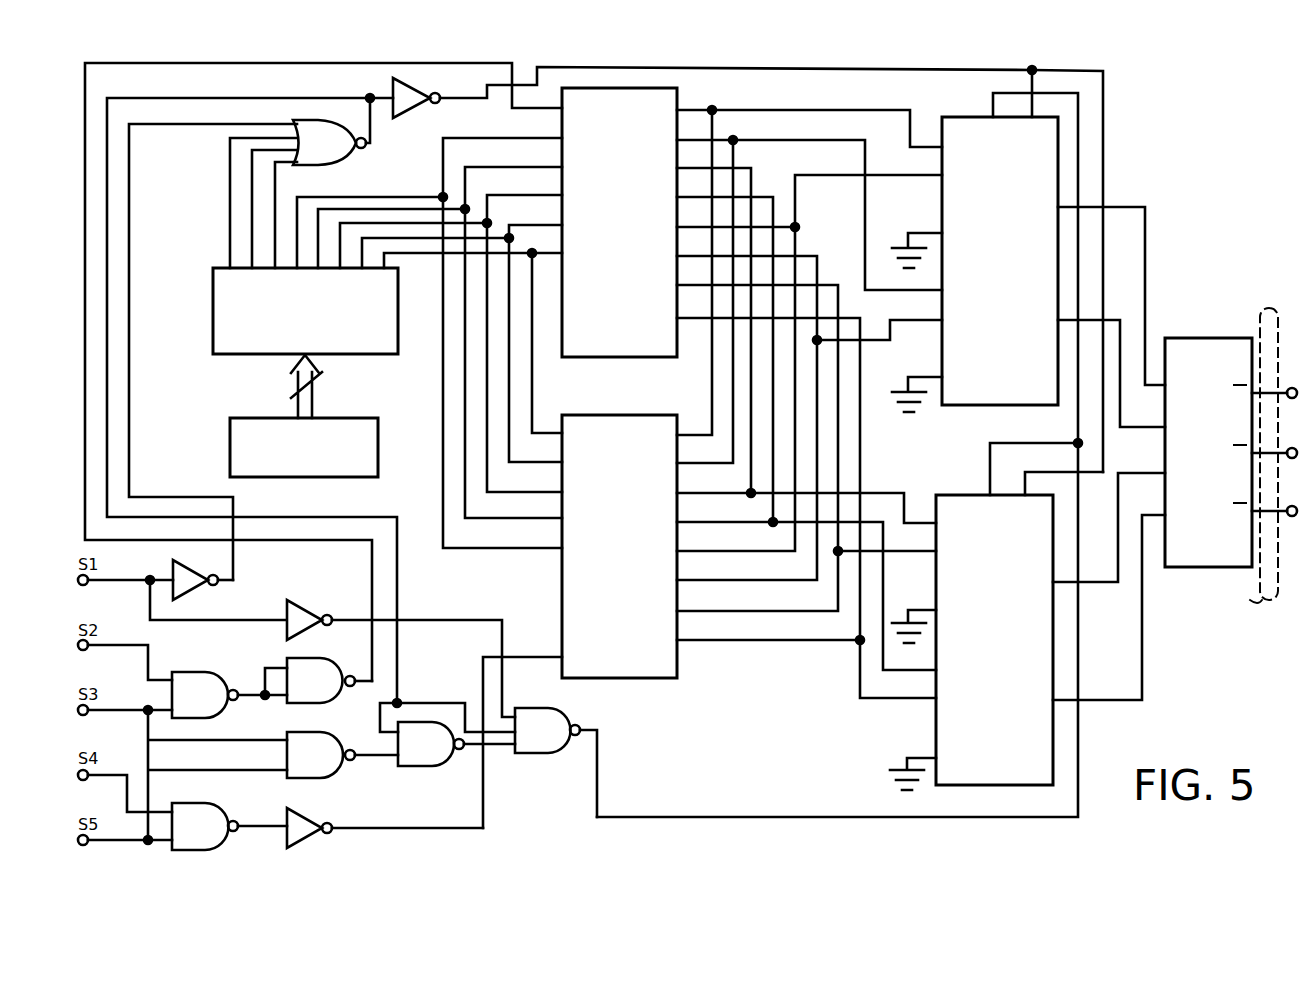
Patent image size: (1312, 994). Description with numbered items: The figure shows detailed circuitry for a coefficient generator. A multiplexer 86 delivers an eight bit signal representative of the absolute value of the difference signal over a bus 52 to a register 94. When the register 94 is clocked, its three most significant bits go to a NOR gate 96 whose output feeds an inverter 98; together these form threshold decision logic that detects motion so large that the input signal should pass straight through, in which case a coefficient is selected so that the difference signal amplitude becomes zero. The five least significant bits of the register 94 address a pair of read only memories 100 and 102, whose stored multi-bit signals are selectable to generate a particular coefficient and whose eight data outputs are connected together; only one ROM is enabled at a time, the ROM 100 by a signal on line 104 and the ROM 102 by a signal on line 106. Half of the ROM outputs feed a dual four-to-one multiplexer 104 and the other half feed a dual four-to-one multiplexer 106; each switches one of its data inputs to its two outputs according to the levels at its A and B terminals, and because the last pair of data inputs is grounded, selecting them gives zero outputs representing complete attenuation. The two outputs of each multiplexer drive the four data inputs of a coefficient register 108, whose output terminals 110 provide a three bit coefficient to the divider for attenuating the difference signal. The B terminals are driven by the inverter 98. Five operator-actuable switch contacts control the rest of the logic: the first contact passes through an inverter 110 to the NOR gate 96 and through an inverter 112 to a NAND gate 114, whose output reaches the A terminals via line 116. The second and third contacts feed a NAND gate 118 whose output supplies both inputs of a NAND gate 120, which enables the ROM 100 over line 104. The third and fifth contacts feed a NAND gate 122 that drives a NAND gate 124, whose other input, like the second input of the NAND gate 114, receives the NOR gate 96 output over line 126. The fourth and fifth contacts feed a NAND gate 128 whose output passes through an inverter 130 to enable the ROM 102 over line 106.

The bus 52 is at (318, 396).
The multiplexer 86 is at (320, 479).
The register 94 is at (255, 357).
The NOR gate 96 is at (321, 166).
The inverter 98 is at (404, 117).
The read only memory 100 is at (640, 358).
The read only memory 102 is at (639, 414).
The dual 4 to 1 multiplexer 104 is at (972, 114).
The dual 4 to 1 multiplexer 106 is at (441, 828).
The coefficient register 108 is at (1205, 337).
The output terminals 110 is at (184, 562).
The inverter 112 is at (316, 602).
The NAND gate 114 is at (531, 754).
The line 116 is at (673, 818).
The NAND gate 118 is at (211, 672).
The NAND gate 120 is at (341, 660).
The NAND gate 122 is at (336, 732).
The NAND gate 124 is at (431, 767).
The line 126 is at (398, 656).
The NAND gate 128 is at (196, 803).
The inverter 130 is at (306, 808).